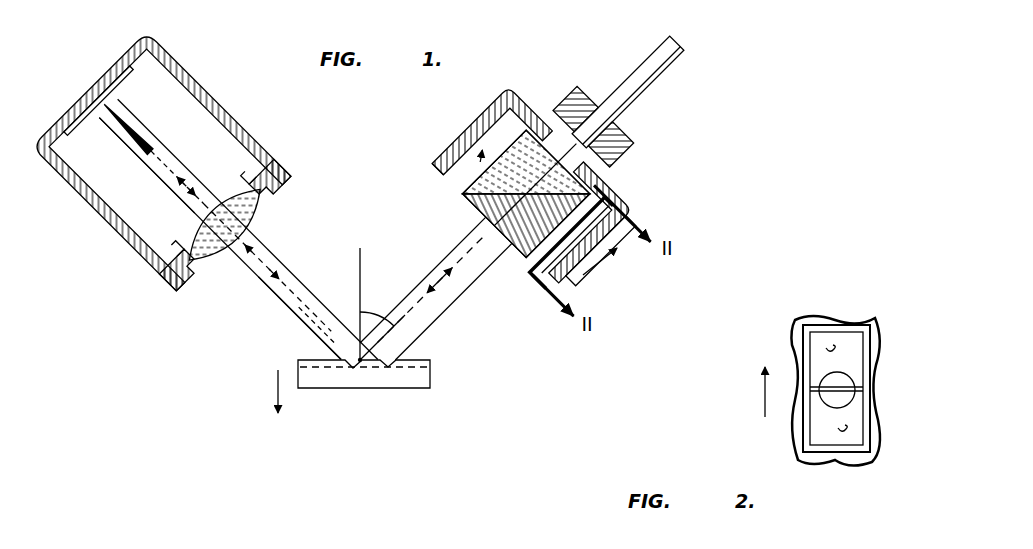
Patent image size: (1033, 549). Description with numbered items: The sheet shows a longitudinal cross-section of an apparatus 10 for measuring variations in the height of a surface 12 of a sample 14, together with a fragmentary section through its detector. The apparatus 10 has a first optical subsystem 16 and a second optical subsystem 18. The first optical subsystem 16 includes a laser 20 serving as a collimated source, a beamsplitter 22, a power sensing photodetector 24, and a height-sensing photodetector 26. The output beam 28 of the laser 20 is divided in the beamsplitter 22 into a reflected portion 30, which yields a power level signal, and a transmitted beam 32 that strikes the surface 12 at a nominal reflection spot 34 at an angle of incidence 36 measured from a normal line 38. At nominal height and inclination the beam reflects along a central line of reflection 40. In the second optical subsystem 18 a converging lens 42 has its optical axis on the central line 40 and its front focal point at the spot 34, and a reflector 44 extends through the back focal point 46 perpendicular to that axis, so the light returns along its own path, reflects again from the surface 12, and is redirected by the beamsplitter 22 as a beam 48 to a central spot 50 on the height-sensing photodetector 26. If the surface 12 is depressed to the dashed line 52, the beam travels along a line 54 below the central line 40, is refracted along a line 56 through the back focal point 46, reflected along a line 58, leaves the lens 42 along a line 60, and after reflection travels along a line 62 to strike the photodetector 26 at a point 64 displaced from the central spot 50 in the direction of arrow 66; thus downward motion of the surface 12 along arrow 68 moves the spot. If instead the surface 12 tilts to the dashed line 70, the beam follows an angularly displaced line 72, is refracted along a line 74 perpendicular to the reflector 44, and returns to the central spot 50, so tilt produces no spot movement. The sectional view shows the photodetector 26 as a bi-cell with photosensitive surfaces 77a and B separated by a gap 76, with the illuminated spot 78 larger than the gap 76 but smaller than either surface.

In FIG. 1, the apparatus 10 is at (162, 360).
In FIG. 1, the surface 12 is at (440, 348).
In FIG. 1, the sample 14 is at (377, 392).
In FIG. 1, the first optical subsystem 16 is at (463, 128).
In FIG. 1, the second optical subsystem 18 is at (250, 123).
In FIG. 1, the laser 20 is at (617, 83).
In FIG. 1, the beamsplitter 22 is at (480, 212).
In FIG. 1, the power sensing photodetector 24 is at (447, 177).
In FIG. 1, the height-sensing photodetector 26 is at (533, 278).
In FIG. 2, the height-sensing photodetector 26 is at (805, 430).
In FIG. 1, the output beam 28 is at (568, 148).
In FIG. 1, the reflected portion 30 is at (481, 150).
In FIG. 1, the transmitted beam 32 is at (452, 262).
In FIG. 1, the nominal reflection spot 34 is at (362, 350).
In FIG. 1, the angle of incidence 36 is at (365, 315).
In FIG. 1, the normal line 38 is at (360, 248).
In FIG. 1, the central line of reflection 40 is at (310, 290).
In FIG. 1, the converging lens 42 is at (210, 262).
In FIG. 1, the reflector 44 is at (118, 83).
In FIG. 1, the back focal point 46 is at (103, 100).
In FIG. 1, the beam 48 is at (610, 205).
In FIG. 1, the central spot 50 is at (583, 275).
In FIG. 1, the dashed line 52 is at (430, 367).
In FIG. 1, the line 54 is at (287, 310).
In FIG. 1, the line 56 is at (142, 152).
In FIG. 1, the line 58 is at (197, 197).
In FIG. 1, the line 60 is at (272, 247).
In FIG. 1, the line 62 is at (478, 277).
In FIG. 1, the point 64 is at (622, 190).
In FIG. 1, the arrow 66 is at (600, 267).
In FIG. 2, the arrow 66 is at (765, 387).
In FIG. 1, the arrow 68 is at (272, 383).
In FIG. 1, the dashed line 70 is at (425, 340).
In FIG. 1, the angularly displaced line 72 is at (308, 317).
In FIG. 1, the line 74 is at (147, 175).
In FIG. 2, the gap 76 is at (840, 393).
In FIG. 2, the photosensitive surface 77a is at (830, 348).
In FIG. 2, the spot 78 is at (843, 370).
In FIG. 2, the photosensitive surface B is at (842, 432).